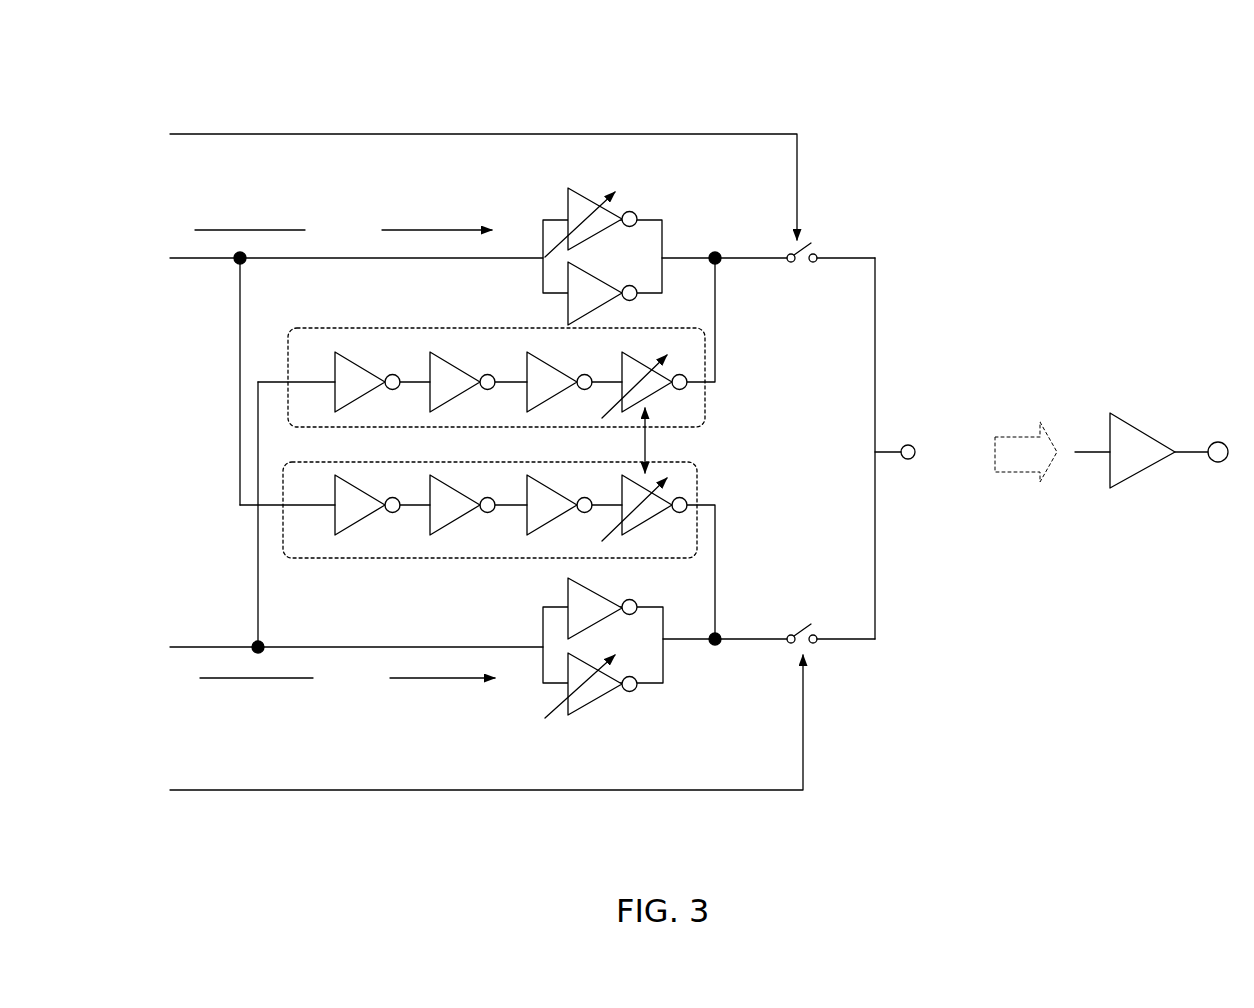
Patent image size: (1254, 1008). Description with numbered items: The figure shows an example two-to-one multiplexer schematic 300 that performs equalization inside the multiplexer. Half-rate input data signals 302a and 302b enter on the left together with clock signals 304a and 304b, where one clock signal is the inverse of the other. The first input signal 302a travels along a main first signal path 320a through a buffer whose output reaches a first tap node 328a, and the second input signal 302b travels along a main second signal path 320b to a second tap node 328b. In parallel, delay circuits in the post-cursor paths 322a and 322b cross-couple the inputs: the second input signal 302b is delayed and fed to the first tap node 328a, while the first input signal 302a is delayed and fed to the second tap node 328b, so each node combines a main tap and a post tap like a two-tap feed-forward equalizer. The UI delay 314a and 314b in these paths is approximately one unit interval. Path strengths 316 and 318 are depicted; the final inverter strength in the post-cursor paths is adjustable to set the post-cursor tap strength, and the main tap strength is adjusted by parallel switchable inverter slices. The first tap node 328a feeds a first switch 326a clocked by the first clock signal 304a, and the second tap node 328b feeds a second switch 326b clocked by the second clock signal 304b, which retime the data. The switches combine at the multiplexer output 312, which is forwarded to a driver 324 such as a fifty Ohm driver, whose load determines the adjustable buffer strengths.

The multiplexer schematic 300 is at (124, 27).
The first input signal 302a is at (320, 375).
The second input signal 302b is at (320, 521).
The first clock signal 304a is at (447, 180).
The second clock signal 304b is at (450, 729).
The multiplexer output 312 is at (924, 448).
The UI delay 314a is at (377, 515).
The UI delay 314b is at (377, 379).
The path strength 316 is at (645, 443).
The path strength 318 is at (593, 458).
The first signal path 320a is at (343, 230).
The second signal path 320b is at (347, 678).
The post-cursor path 322a is at (508, 578).
The post-cursor path 322b is at (483, 313).
The driver 324 is at (1151, 463).
The first switch 326a is at (825, 271).
The second switch 326b is at (825, 622).
The first tap node 328a is at (735, 245).
The second tap node 328b is at (738, 656).